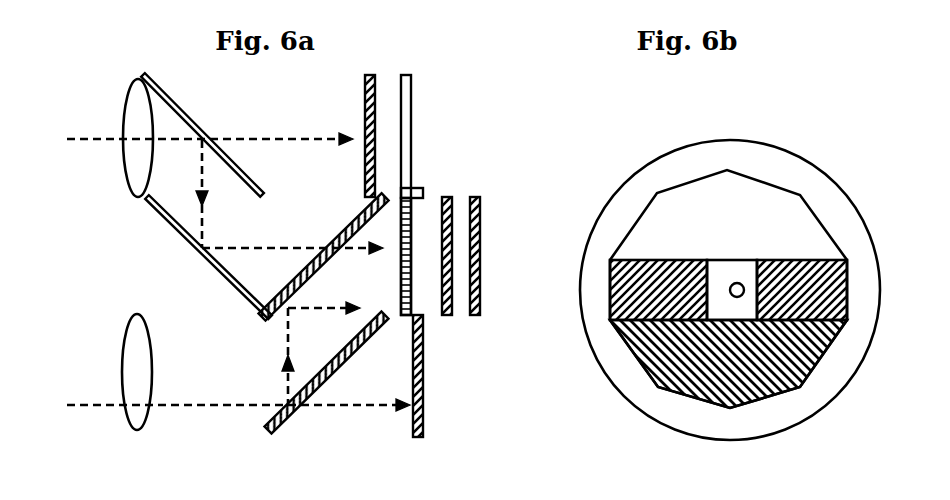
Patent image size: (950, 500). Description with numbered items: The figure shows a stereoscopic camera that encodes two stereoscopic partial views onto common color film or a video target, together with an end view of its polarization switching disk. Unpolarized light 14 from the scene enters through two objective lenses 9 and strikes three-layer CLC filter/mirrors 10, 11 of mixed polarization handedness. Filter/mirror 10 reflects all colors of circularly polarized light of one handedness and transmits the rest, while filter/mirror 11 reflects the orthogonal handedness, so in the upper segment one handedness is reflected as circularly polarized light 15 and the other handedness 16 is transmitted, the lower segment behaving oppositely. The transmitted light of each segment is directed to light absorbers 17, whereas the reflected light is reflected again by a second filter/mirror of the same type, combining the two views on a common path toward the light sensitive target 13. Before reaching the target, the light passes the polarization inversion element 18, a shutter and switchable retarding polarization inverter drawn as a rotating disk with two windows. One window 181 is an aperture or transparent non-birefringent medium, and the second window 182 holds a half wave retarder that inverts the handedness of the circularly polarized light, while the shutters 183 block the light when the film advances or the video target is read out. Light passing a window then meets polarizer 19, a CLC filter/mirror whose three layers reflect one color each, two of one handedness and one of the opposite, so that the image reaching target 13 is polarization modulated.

In FIG. 6a, the objective lens 9 is at (128, 318).
In FIG. 6a, the CLC filter/mirror 10 is at (185, 118).
In FIG. 6a, the CLC filter/mirror 11 is at (352, 230).
In FIG. 6a, the target 13 is at (480, 273).
In FIG. 6a, the unpolarized light 14 is at (87, 137).
In FIG. 6a, the reflected circularly polarized light 15 is at (202, 225).
In FIG. 6a, the transmitted circularly polarized light 16 is at (247, 138).
In FIG. 6a, the light absorber 17 is at (375, 77).
In FIG. 6a, the polarization inversion element 18 is at (410, 135).
In FIG. 6b, the polarization inversion element 18 is at (633, 177).
In FIG. 6a, the polarizer 19 is at (450, 197).
In FIG. 6b, the window 181 is at (690, 222).
In FIG. 6b, the window 182 is at (683, 353).
In FIG. 6b, the shutter 183 is at (623, 297).